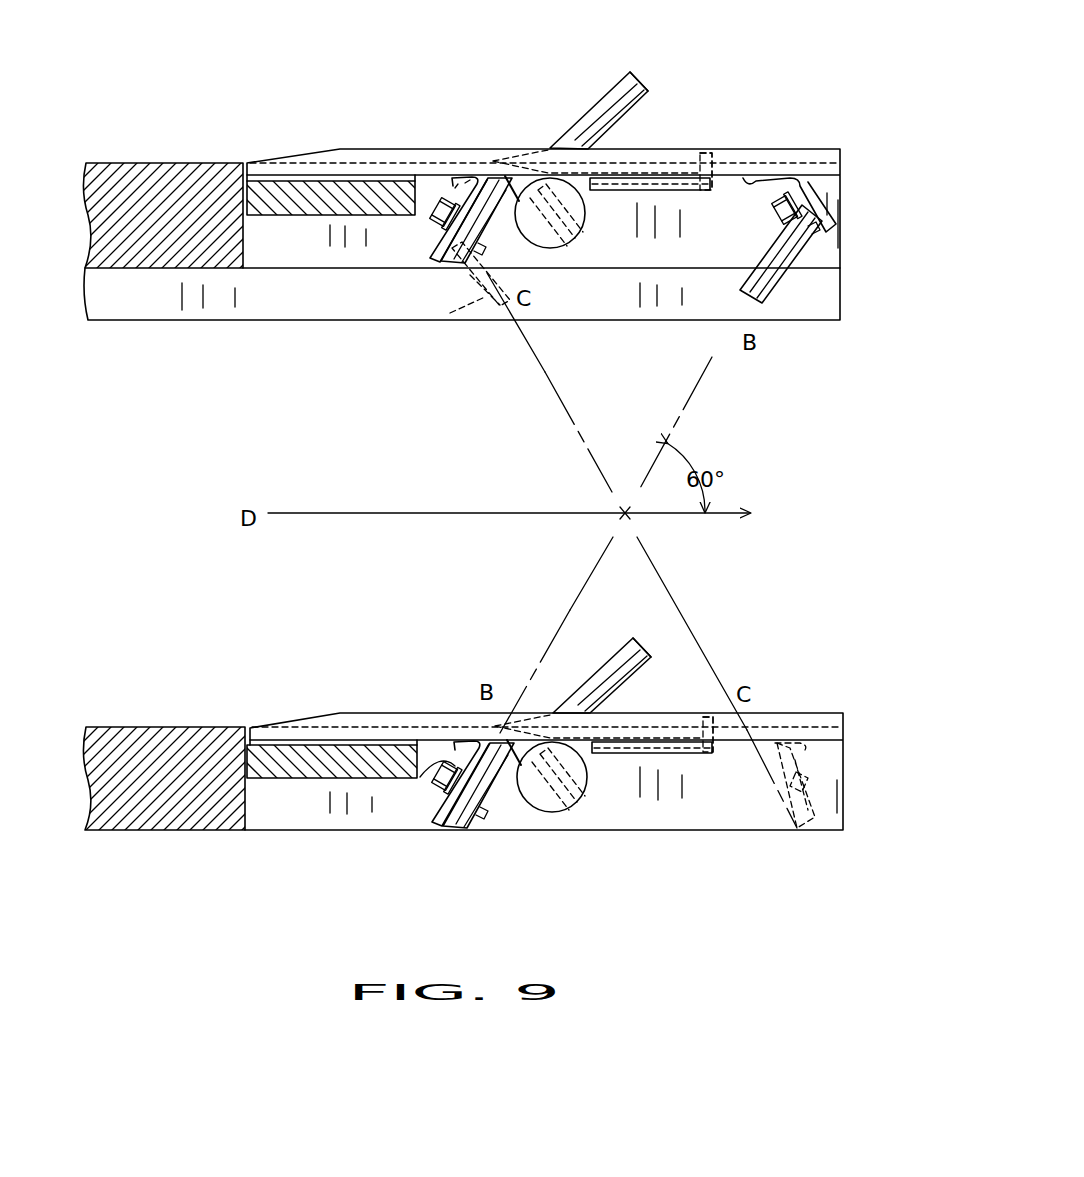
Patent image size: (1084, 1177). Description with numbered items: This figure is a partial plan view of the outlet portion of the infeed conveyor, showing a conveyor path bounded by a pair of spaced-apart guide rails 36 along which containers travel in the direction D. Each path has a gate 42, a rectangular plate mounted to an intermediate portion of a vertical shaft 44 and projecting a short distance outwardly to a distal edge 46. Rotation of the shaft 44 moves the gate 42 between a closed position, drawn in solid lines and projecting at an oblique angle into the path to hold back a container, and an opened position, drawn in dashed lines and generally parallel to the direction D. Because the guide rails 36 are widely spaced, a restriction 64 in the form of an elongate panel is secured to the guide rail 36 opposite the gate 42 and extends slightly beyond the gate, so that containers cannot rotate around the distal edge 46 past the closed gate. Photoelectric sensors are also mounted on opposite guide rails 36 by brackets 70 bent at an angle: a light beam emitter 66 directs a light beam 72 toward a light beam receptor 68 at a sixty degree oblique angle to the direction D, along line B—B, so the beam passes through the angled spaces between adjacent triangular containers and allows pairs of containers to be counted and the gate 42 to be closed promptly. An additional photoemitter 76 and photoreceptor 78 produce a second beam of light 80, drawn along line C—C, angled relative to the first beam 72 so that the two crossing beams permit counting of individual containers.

The guide rail 36 is at (185, 163).
The gate 42 is at (626, 114).
The shaft 44 is at (560, 250).
The distal edge 46 is at (641, 73).
The restriction 64 is at (187, 323).
The light beam emitter 66 is at (436, 263).
The light beam receptor 68 is at (770, 282).
The bracket 70 is at (453, 185).
The light beam 72 is at (592, 571).
The additional photoemitter 76 is at (823, 773).
The additional photoreceptor 78 is at (448, 320).
The beam of light 80 is at (572, 425).